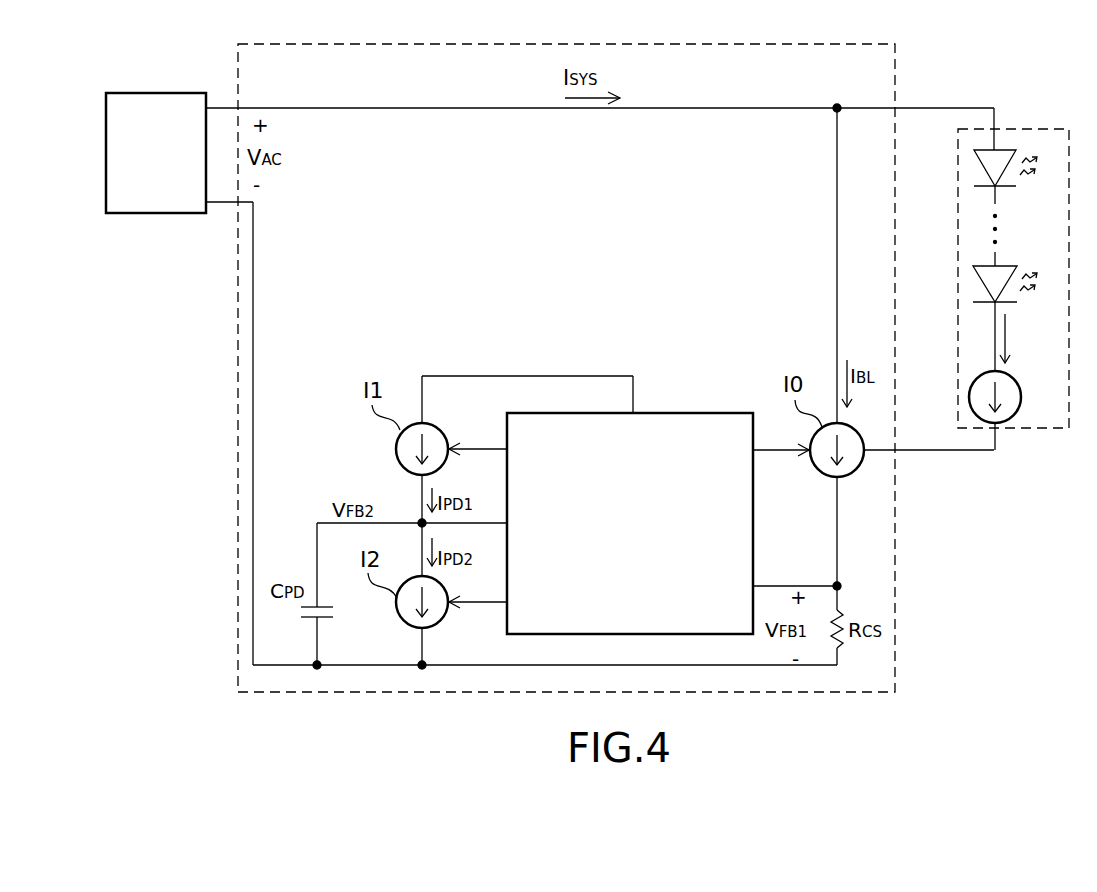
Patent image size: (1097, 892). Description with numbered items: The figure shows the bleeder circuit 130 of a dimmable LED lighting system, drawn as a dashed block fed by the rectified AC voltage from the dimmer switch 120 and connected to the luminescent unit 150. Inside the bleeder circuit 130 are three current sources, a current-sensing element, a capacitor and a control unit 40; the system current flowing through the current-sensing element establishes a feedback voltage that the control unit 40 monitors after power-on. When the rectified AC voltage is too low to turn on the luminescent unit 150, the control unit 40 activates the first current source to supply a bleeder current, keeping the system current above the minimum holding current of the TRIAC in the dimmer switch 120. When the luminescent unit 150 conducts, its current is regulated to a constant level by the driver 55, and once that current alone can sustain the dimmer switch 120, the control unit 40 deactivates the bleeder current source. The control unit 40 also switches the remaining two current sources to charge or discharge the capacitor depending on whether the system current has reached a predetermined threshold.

The dimmer switch 120 is at (176, 168).
The bleeder circuit 130 is at (895, 77).
The luminescent unit 150 is at (1037, 128).
The control unit 40 is at (650, 533).
The driver 55 is at (1020, 408).